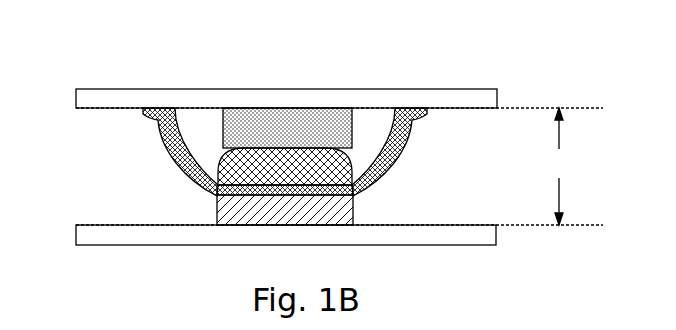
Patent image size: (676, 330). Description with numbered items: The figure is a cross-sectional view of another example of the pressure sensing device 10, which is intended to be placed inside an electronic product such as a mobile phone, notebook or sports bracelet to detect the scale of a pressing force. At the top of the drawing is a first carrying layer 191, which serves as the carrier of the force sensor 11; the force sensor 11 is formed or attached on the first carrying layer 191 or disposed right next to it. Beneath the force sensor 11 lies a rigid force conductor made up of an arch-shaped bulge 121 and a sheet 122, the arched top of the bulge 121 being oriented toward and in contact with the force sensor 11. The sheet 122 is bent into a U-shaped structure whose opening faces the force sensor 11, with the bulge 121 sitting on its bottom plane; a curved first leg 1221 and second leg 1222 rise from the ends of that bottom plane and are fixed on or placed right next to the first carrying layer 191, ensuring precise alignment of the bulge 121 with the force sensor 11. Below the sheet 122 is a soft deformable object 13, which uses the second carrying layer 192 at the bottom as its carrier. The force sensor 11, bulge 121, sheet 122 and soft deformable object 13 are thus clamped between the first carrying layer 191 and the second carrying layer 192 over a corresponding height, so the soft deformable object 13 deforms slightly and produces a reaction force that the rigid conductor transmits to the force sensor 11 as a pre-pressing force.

The pressure sensing device 10 is at (328, 28).
The force sensor 11 is at (224, 139).
The bulge 121 is at (346, 163).
The sheet 122 is at (378, 190).
The first leg 1221 is at (152, 117).
The second leg 1222 is at (427, 113).
The soft deformable object 13 is at (218, 220).
The first carrying layer 191 is at (80, 89).
The second carrying layer 192 is at (83, 228).